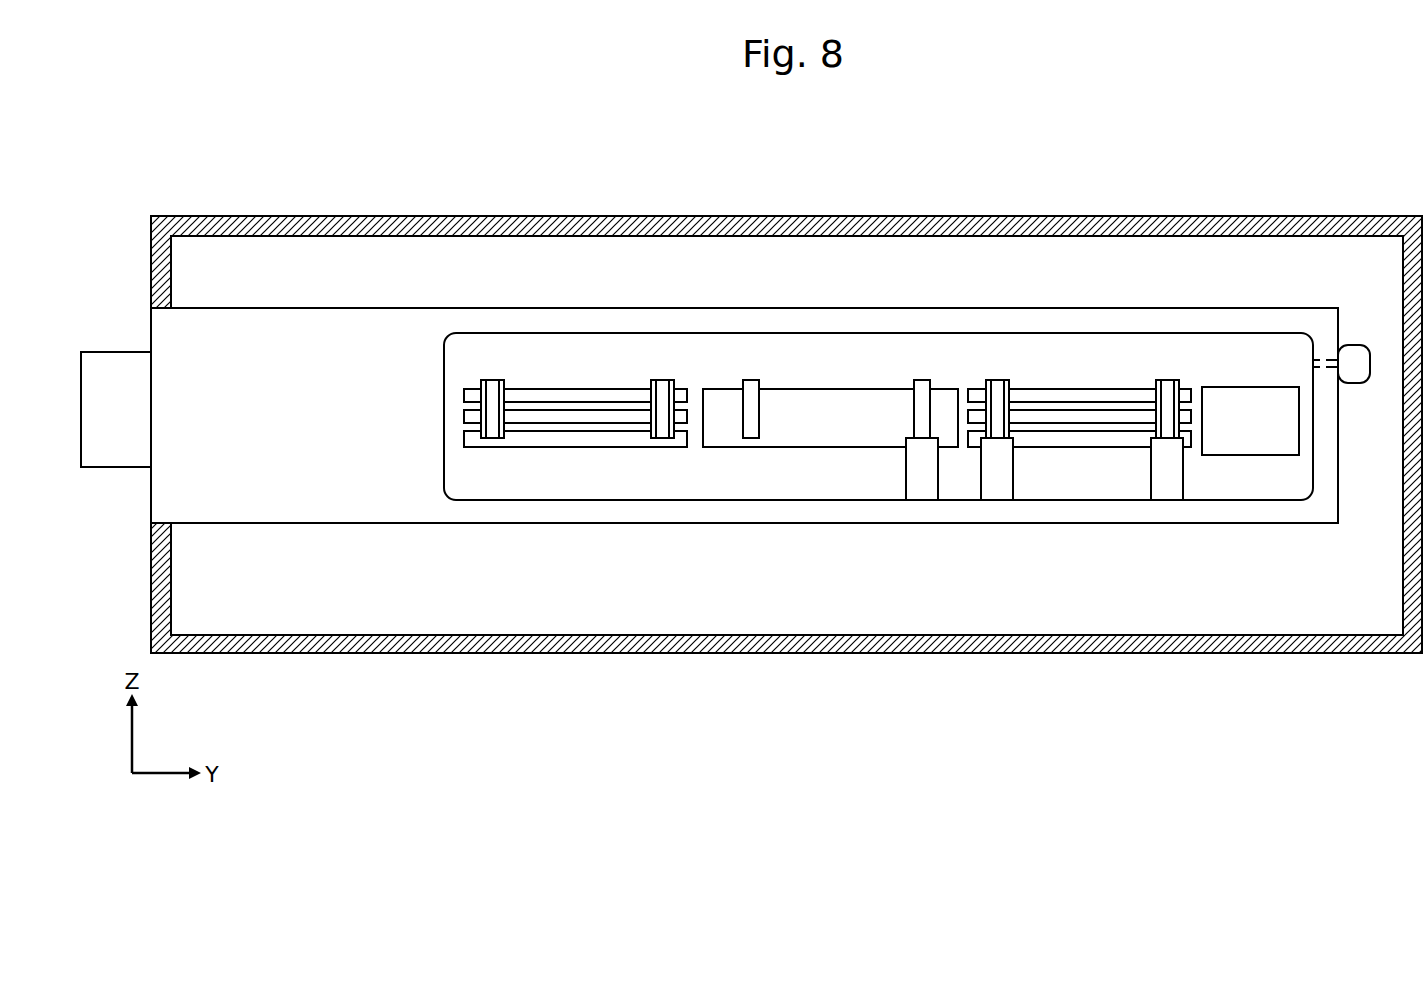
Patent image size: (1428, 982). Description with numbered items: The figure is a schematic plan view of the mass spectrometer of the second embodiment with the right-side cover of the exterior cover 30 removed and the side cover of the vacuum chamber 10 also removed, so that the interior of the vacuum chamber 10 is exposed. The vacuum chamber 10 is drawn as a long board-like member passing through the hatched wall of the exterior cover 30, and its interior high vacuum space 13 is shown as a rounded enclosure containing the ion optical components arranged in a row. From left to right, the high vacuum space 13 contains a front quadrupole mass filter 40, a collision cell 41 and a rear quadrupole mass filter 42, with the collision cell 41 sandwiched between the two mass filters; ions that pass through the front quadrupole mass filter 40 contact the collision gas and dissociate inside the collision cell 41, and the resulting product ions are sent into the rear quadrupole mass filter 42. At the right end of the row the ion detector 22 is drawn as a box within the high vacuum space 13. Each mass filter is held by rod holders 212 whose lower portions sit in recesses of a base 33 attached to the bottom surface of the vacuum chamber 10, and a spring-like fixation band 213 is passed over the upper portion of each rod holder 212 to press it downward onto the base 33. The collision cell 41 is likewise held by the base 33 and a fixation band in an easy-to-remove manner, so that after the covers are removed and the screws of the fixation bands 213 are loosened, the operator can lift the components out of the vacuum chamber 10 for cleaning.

The vacuum chamber 10 is at (973, 307).
The high vacuum space 13 is at (1250, 480).
The ion detector 22 is at (1270, 387).
The exterior cover 30 is at (1092, 217).
The base 33 is at (927, 495).
The front quadrupole mass filter 40 is at (607, 378).
The collision cell 41 is at (843, 378).
The rear quadrupole mass filter 42 is at (1108, 378).
The rod holder 212 is at (505, 386).
The fixation band 213 is at (493, 380).